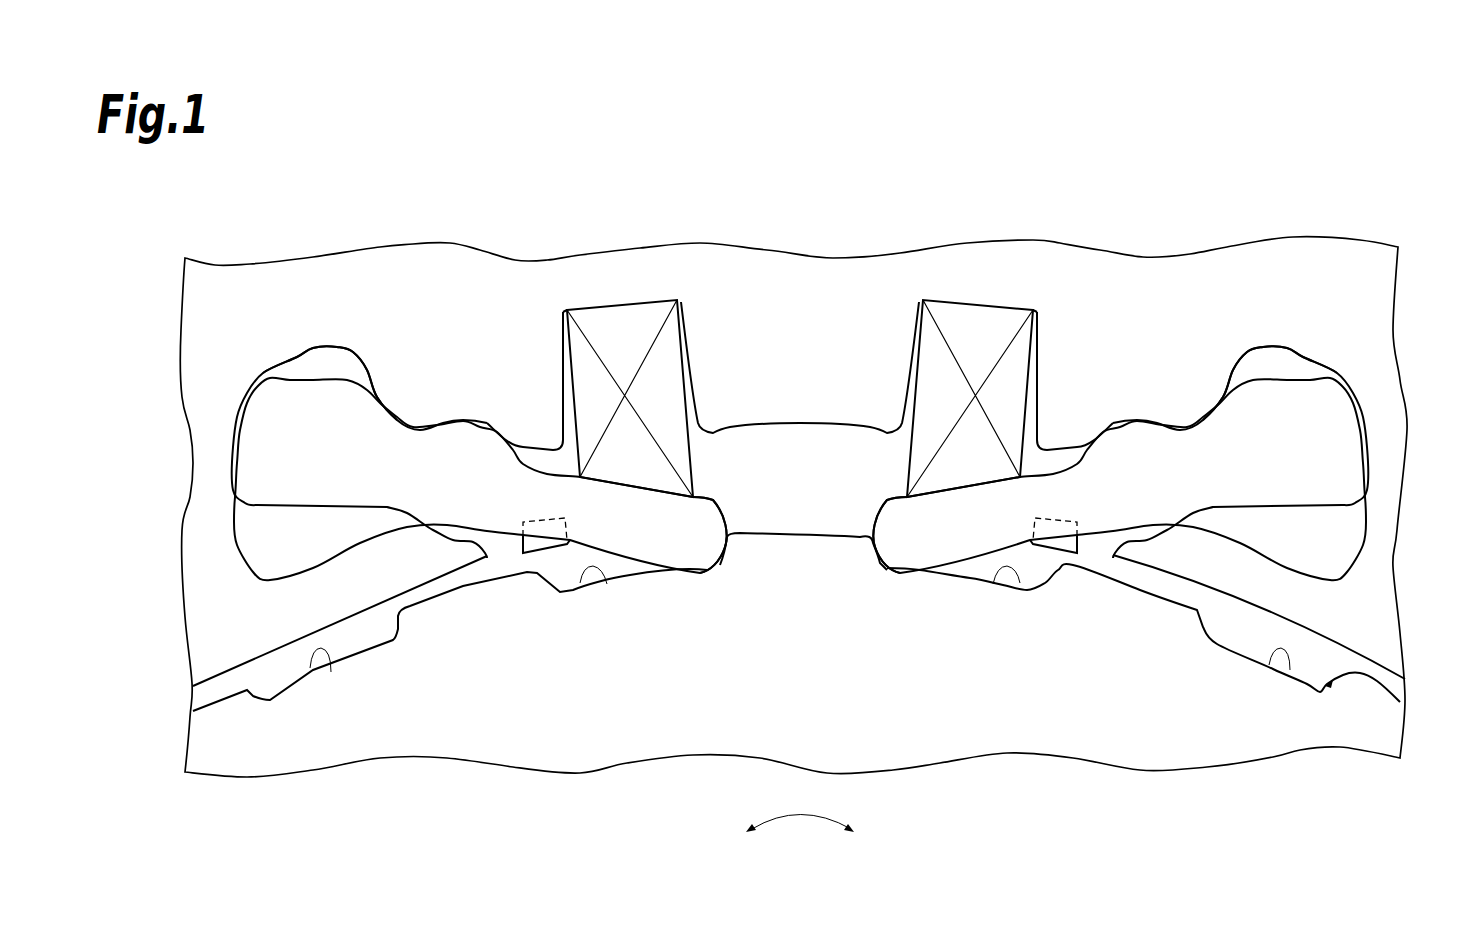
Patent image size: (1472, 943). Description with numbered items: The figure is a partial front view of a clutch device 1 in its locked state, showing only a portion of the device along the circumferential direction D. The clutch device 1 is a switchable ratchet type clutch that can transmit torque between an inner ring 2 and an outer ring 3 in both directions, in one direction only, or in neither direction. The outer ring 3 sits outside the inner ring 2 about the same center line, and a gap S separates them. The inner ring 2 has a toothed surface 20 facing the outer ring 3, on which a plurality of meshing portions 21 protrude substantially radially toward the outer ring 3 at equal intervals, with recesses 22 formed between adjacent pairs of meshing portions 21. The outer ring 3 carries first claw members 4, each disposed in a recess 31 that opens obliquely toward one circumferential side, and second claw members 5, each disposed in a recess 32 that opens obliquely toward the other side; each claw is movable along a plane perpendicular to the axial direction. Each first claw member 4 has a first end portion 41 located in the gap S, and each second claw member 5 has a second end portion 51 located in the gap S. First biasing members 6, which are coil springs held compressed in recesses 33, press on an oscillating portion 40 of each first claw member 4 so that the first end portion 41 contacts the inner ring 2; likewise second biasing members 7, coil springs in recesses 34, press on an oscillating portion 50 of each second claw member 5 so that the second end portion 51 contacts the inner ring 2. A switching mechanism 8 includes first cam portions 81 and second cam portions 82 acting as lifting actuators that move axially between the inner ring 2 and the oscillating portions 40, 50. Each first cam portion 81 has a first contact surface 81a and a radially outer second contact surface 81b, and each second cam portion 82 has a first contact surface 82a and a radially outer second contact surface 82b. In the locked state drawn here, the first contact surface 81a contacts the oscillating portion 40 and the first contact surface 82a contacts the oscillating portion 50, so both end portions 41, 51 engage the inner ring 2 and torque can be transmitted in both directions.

The clutch device 1 is at (942, 221).
The inner ring 2 is at (703, 737).
The toothed surface 20 is at (1341, 700).
The meshing portions 21 is at (430, 607).
The recesses 22 is at (310, 668).
The outer ring 3 is at (812, 273).
The recesses 31 is at (367, 372).
The recesses 32 is at (1233, 365).
The recesses 33 is at (577, 400).
The recesses 34 is at (1024, 397).
The first claw members 4 is at (257, 505).
The second claw members 5 is at (1310, 507).
The oscillating portion 40 is at (633, 563).
The first end portion 41 is at (713, 495).
The oscillating portion 50 is at (963, 560).
The second end portion 51 is at (893, 507).
The first biasing members 6 is at (622, 328).
The second biasing members 7 is at (985, 318).
The switching mechanism 8 is at (824, 508).
The first cam portions 81 is at (530, 552).
The first contact surface 81a is at (530, 533).
The second contact surface 81b is at (543, 518).
The second cam portions 82 is at (1067, 555).
The first contact surface 82a is at (1070, 533).
The second contact surface 82b is at (1053, 518).
The gap S is at (806, 517).
The circumferential direction D is at (799, 815).